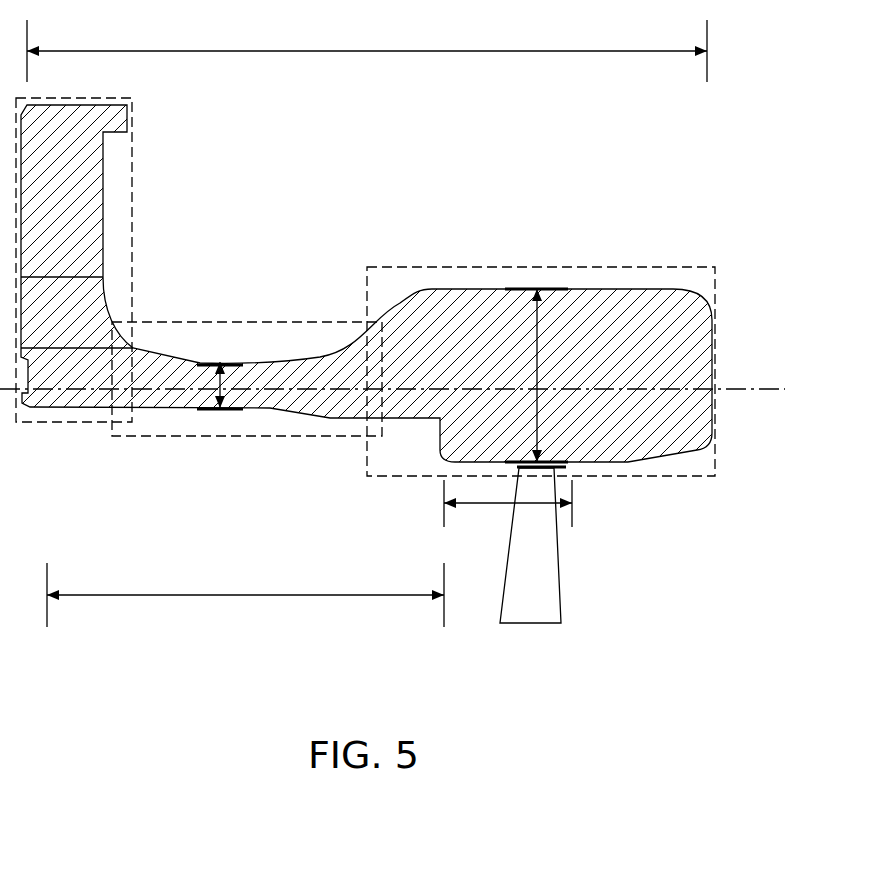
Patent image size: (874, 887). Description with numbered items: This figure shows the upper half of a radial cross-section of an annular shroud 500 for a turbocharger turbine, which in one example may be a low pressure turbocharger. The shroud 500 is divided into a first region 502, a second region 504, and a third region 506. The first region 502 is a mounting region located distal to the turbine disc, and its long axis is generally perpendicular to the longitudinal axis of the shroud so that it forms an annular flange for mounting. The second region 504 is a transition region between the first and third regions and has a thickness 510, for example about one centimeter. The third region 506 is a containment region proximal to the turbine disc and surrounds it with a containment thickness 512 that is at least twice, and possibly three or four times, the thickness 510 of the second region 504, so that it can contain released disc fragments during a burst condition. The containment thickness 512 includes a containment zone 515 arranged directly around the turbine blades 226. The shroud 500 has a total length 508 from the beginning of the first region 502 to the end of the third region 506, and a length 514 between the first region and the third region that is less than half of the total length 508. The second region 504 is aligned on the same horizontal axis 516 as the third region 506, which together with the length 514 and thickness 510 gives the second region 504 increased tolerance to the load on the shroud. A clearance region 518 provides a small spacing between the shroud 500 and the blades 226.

The annular shroud 500 is at (716, 203).
The first region 502 is at (133, 147).
The second region 504 is at (270, 321).
The third region 506 is at (523, 267).
The total length 508 is at (421, 51).
The thickness of the second region 510 is at (220, 366).
The containment thickness 512 is at (547, 289).
The length between the first region and the third region 514 is at (275, 594).
The containment zone 515 is at (572, 522).
The horizontal axis 516 is at (740, 386).
The clearance region 518 is at (565, 472).
The turbine blades 226 is at (558, 568).